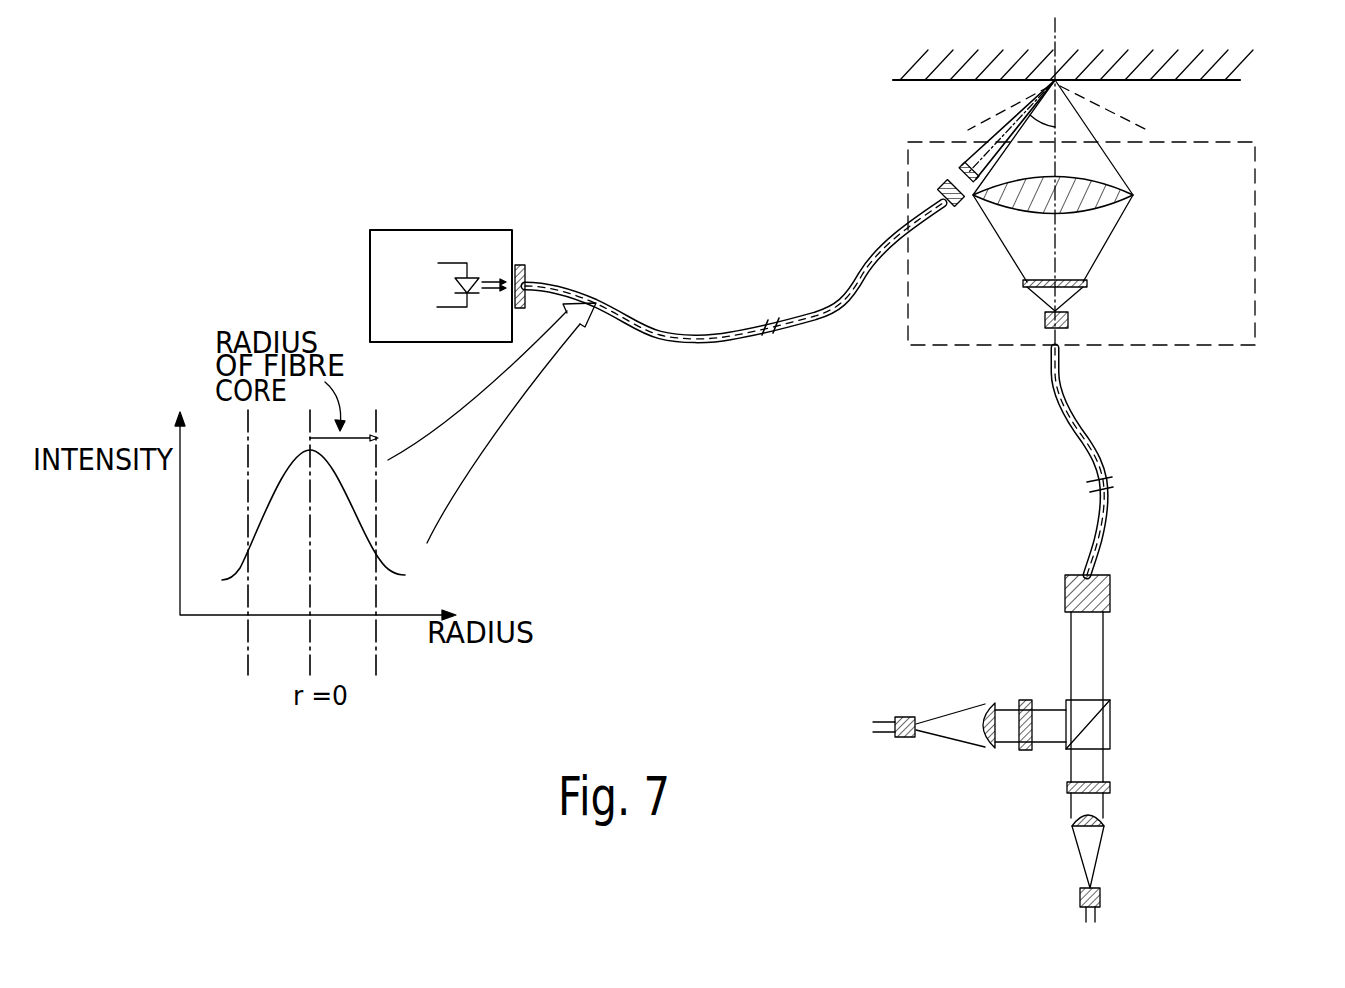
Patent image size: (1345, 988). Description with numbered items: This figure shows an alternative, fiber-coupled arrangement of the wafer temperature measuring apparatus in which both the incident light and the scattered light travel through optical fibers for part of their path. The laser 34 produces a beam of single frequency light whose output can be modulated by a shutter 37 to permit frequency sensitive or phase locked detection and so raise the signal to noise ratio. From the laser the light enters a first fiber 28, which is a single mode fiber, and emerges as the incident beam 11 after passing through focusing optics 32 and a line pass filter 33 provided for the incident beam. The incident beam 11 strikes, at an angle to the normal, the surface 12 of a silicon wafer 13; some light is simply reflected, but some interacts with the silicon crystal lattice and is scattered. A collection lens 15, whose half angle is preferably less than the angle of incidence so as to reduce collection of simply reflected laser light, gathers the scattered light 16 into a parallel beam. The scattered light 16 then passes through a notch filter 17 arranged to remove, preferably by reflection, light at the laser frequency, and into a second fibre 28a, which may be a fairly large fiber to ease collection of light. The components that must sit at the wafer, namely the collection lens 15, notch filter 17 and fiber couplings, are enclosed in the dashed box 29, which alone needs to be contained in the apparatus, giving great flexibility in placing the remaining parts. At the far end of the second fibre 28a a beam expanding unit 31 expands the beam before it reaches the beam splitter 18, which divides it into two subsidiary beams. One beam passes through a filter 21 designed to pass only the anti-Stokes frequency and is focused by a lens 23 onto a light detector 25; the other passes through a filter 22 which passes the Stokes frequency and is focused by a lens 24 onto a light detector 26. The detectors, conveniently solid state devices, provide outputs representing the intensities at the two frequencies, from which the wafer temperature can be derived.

The incident beam 11 is at (1010, 123).
The surface 12 is at (912, 82).
The silicon wafer 13 is at (928, 68).
The collection lens 15 is at (1103, 200).
The scattered light 16 is at (1119, 160).
The notch filter 17 is at (1080, 283).
The beam splitter 18 is at (1111, 719).
The filter 21 is at (1111, 790).
The filter 22 is at (1026, 751).
The lens 23 is at (1072, 828).
The lens 24 is at (981, 732).
The light detector 25 is at (1100, 893).
The light detector 26 is at (899, 717).
The first fiber 28 is at (658, 337).
The second fibre 28a is at (1103, 524).
The dashed box 29 is at (1258, 305).
The beam expanding unit 31 is at (1065, 593).
The focusing optics 32 is at (946, 198).
The line pass filter 33 is at (958, 168).
The laser 34 is at (427, 237).
The shutter 37 is at (526, 268).